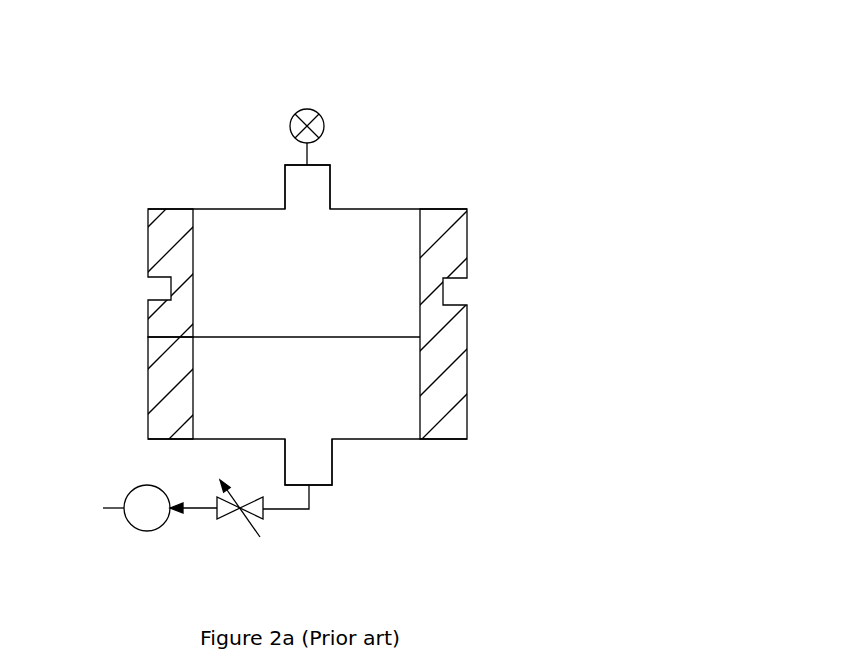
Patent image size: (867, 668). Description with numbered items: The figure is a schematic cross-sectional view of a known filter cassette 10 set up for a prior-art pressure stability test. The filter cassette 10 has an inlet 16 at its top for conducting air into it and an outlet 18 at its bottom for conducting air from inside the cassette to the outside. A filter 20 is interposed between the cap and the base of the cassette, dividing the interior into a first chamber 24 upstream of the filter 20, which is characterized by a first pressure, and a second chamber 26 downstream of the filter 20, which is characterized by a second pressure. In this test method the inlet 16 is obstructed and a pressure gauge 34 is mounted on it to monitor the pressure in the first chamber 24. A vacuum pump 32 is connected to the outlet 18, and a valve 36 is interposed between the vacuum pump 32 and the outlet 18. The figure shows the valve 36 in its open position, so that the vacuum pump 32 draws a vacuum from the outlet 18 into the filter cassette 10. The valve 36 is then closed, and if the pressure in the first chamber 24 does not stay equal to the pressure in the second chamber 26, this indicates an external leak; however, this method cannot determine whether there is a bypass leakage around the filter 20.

The filter cassette 10 is at (456, 126).
The inlet 16 is at (316, 202).
The outlet 18 is at (317, 448).
The filter 20 is at (320, 337).
The first chamber 24 is at (212, 273).
The second chamber 26 is at (215, 392).
The vacuum pump 32 is at (132, 486).
The pressure gauge 34 is at (310, 108).
The valve 36 is at (263, 513).